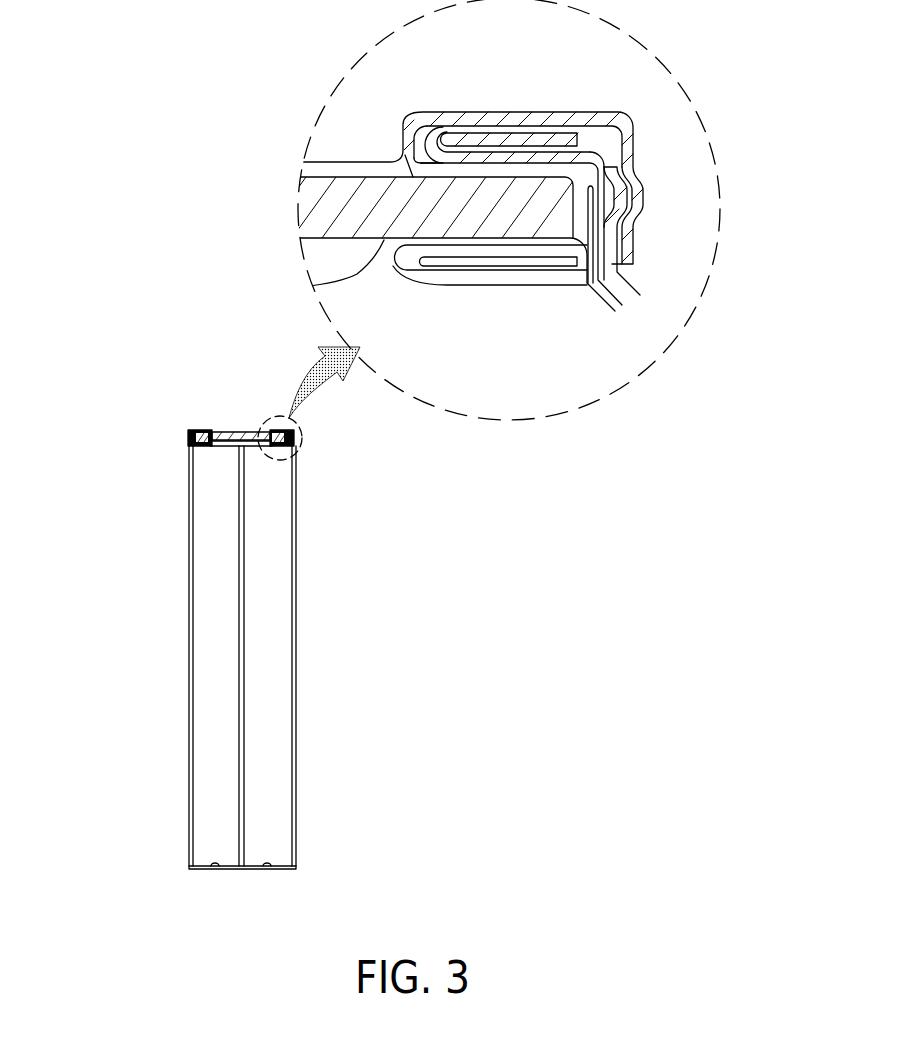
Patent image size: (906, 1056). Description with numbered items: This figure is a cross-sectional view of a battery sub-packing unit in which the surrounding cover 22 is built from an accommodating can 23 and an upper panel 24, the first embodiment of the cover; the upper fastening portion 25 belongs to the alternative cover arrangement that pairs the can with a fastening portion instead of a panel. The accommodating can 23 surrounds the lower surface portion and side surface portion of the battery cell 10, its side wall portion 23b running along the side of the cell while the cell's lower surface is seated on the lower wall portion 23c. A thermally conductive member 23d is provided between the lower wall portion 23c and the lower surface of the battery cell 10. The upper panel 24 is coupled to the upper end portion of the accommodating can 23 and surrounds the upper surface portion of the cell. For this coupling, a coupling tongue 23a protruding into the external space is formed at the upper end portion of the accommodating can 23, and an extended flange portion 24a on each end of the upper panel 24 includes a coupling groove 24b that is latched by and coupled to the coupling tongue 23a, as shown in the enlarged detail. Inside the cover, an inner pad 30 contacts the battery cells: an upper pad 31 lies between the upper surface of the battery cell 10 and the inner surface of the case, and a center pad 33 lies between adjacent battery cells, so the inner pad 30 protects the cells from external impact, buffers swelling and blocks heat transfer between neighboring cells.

The battery cell 10 is at (272, 636).
The surrounding cover 22 is at (166, 671).
The accommodating can 23 is at (187, 687).
The coupling tongue 23a is at (628, 205).
The side wall portion of the accommodating can 23b is at (189, 757).
The lower wall portion 23c is at (200, 869).
The thermally conductive member 23d is at (194, 896).
The upper panel 24 is at (545, 112).
The extended flange portion 24a is at (634, 132).
The coupling groove 24b is at (641, 190).
The upper fastening portion 25 is at (210, 430).
The inner pad 30 is at (301, 653).
The upper pad 31 is at (225, 446).
The center pad 33 is at (357, 465).